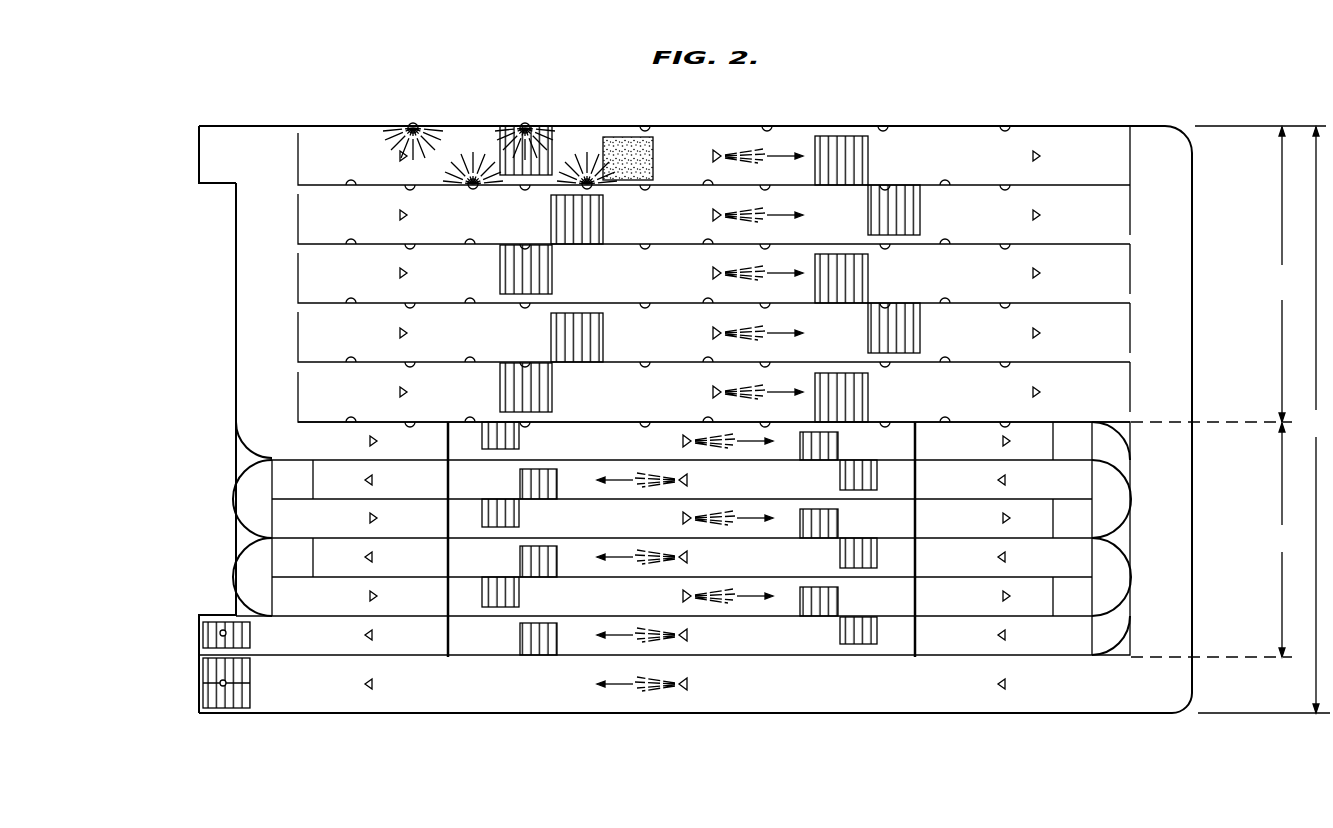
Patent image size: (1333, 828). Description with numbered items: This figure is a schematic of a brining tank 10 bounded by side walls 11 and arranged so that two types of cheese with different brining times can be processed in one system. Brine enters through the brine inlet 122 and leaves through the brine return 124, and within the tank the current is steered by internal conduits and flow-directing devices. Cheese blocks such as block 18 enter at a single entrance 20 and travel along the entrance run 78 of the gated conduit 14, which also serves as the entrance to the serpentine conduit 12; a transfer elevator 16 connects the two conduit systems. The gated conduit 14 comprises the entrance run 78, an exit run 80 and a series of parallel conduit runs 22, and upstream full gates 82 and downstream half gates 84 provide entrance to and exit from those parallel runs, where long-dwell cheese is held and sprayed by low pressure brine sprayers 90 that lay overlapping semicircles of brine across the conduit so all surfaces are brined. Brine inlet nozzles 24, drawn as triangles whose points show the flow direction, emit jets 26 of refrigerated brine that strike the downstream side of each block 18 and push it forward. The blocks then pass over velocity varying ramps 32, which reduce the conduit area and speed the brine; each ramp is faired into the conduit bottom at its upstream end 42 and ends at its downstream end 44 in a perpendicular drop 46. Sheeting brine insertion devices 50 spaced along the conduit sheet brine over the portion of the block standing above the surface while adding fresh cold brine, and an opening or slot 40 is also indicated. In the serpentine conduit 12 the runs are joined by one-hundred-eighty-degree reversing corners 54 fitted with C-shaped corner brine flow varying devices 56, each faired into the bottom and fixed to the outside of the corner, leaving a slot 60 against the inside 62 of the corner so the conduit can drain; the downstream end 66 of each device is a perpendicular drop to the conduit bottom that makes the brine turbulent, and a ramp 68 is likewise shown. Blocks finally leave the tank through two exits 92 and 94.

The brining tank 10 is at (764, 419).
The side walls 11 is at (998, 186).
The serpentine conduit 12 is at (1284, 540).
The gated conduit 14 is at (1283, 274).
The transfer elevator 16 is at (218, 685).
The cheese block 18 is at (650, 138).
The entrance 20 is at (200, 157).
The parallel conduit run 22 is at (312, 365).
The brine inlet nozzle 24 is at (1005, 684).
The jet or brine stream 26 is at (737, 152).
The velocity varying ramp 32 is at (833, 155).
The opening or slot 40 is at (853, 645).
The upstream end of ramp 42 is at (557, 637).
The downstream end of ramp 44 is at (520, 637).
The perpendicular drop 46 is at (868, 163).
The sheeting brine insertion device 50 is at (448, 636).
The 180 degree reversing corners 54 is at (293, 478).
The corner brine flow varying device 56 is at (1113, 537).
The slot 60 is at (1090, 615).
The inside of reversing corner 62 is at (1113, 470).
The downstream end of corner brine flow device 66 is at (270, 592).
The ramp 68 is at (276, 497).
The entrance run 78 is at (260, 300).
The exit run 80 is at (1160, 340).
The upstream full gate 82 is at (297, 395).
The downstream half gate 84 is at (1130, 163).
The gated conduit brine sprayers 90 is at (410, 187).
The exit 92 is at (200, 621).
The exit 94 is at (200, 688).
The brine inlet 122 is at (232, 158).
The brine return 124 is at (222, 637).